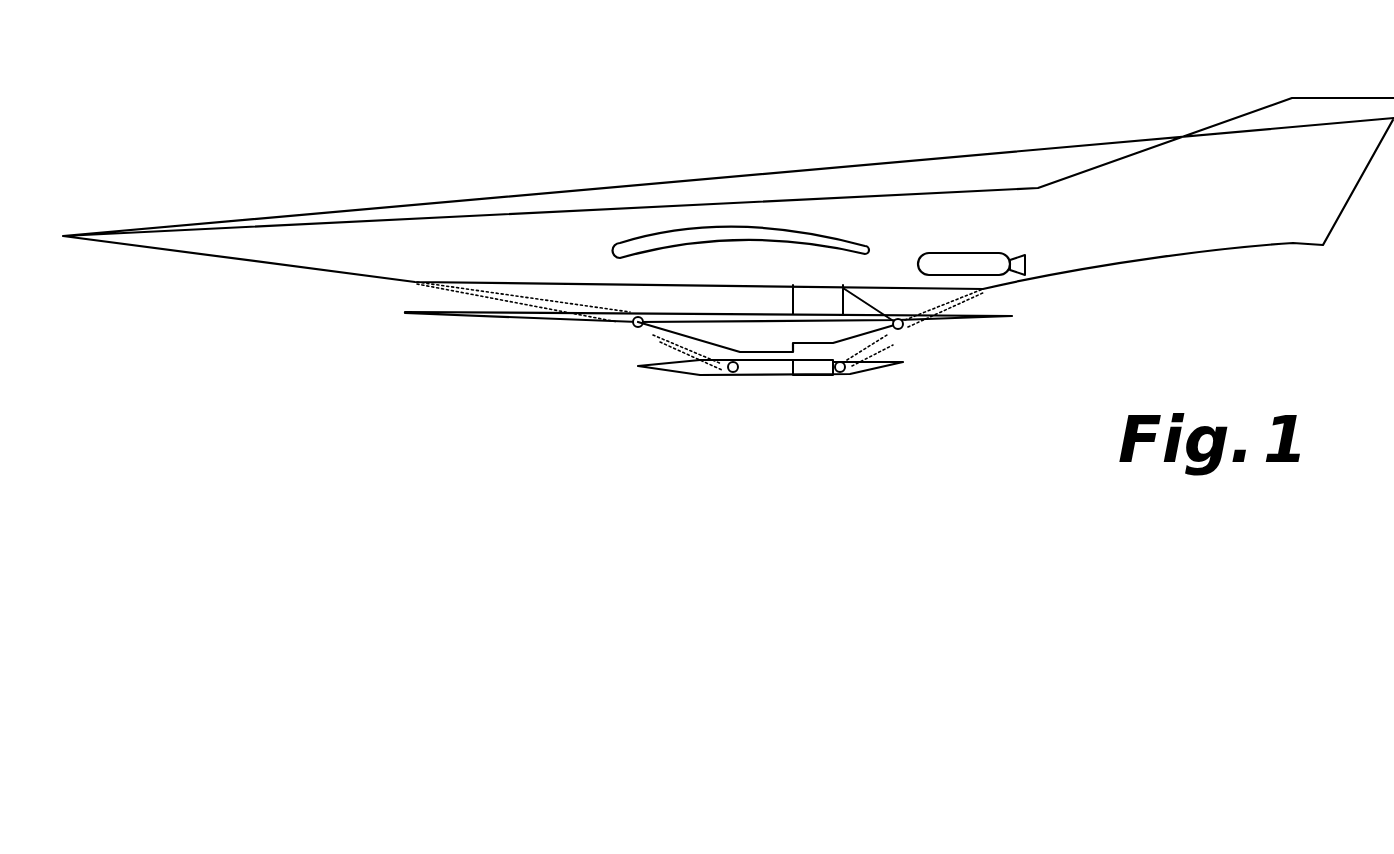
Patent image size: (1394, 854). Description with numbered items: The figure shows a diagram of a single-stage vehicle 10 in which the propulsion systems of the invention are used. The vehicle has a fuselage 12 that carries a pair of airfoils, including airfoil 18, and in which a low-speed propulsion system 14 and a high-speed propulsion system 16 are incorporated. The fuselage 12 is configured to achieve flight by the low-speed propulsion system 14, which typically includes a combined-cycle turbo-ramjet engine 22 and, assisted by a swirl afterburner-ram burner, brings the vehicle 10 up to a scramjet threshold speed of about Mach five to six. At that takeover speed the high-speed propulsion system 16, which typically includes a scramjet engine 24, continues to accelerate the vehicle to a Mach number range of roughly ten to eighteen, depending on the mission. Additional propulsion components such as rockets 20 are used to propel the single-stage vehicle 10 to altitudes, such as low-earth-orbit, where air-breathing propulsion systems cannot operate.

The single-stage vehicle 10 is at (282, 175).
The fuselage 12 is at (848, 227).
The low-speed propulsion system 14 is at (379, 326).
The high-speed propulsion system 16 is at (668, 381).
The airfoil 18 is at (653, 245).
The rocket 20 is at (965, 253).
The combined-cycle turbo-ramjet engine 22 is at (911, 329).
The scramjet engine 24 is at (817, 353).